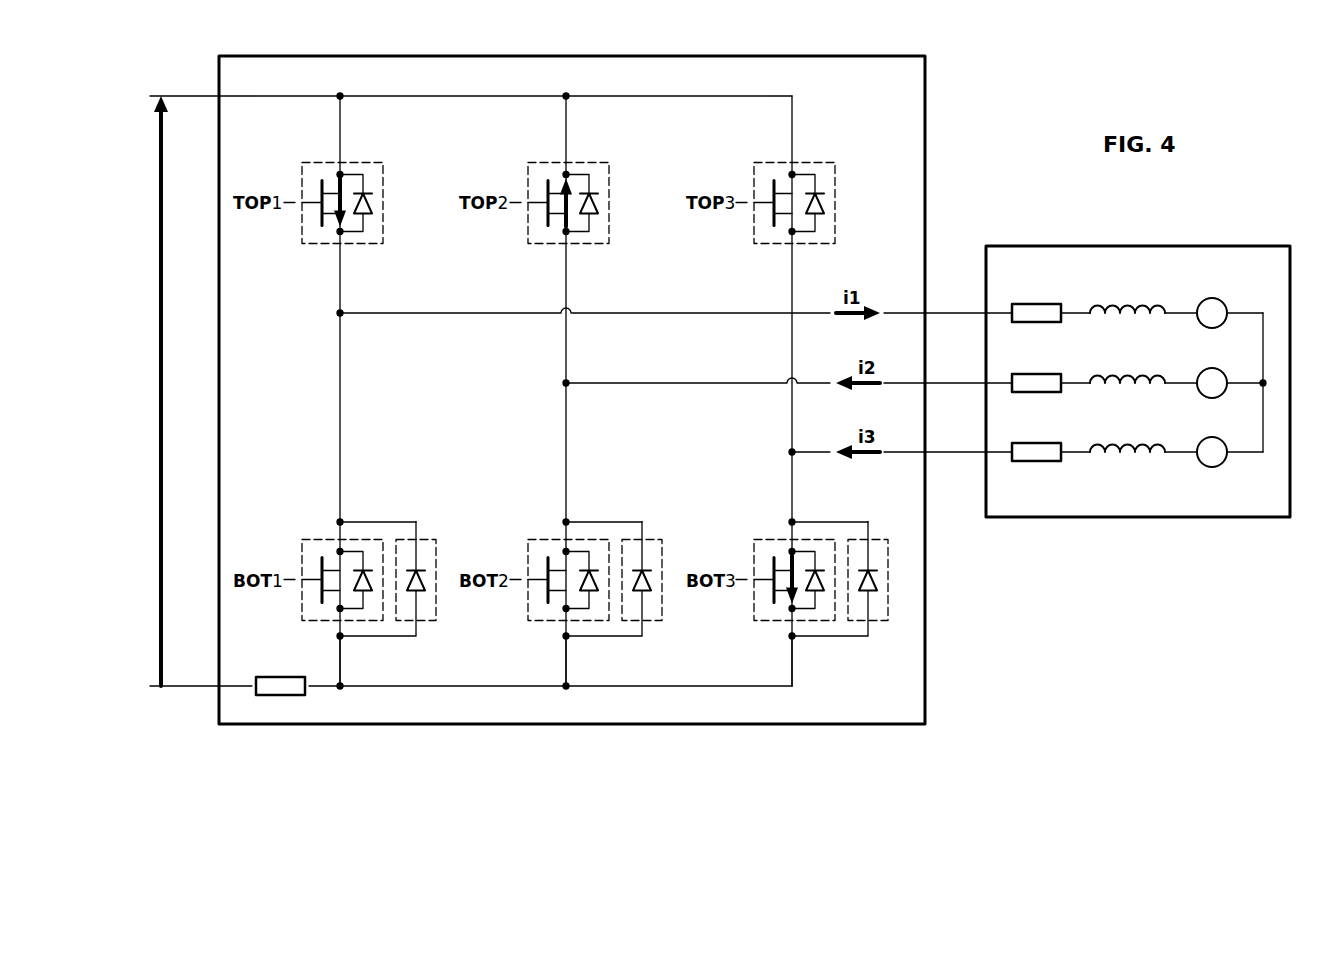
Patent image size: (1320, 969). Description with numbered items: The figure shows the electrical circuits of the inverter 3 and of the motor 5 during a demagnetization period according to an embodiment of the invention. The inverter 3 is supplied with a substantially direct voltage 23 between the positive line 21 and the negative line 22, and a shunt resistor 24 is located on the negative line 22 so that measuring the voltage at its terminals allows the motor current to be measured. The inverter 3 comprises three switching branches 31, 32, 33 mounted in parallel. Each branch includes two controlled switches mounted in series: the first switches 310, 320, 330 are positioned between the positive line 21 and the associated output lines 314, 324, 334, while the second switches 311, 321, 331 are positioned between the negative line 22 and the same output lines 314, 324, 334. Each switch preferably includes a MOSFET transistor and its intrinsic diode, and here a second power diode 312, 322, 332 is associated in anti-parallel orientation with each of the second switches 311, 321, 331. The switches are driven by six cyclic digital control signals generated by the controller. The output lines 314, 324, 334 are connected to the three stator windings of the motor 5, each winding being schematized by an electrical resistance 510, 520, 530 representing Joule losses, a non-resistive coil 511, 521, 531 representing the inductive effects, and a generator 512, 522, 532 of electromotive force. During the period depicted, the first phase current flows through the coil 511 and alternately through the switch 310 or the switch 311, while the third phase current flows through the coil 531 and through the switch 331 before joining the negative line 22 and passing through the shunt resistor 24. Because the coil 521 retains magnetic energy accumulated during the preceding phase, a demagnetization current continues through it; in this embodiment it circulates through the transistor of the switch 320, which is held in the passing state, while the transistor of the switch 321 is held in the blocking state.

The inverter 3 is at (570, 56).
The motor 5 is at (1137, 246).
The positive line 21 is at (188, 95).
The negative line 22 is at (186, 688).
The direct voltage 23 is at (161, 313).
The shunt resistor 24 is at (281, 677).
The first switching branch 31 is at (340, 668).
The second switching branch 32 is at (566, 668).
The third switching branch 33 is at (792, 668).
The first switch of first branch 310 is at (360, 162).
The first switch of second branch 320 is at (586, 162).
The first switch of third branch 330 is at (812, 162).
The second switch of first branch 311 is at (322, 539).
The second power diode 312 is at (428, 539).
The second switch of second branch 321 is at (548, 539).
The second power diode 322 is at (654, 539).
The second switch of third branch 331 is at (774, 539).
The second power diode 332 is at (880, 539).
The first output line 314 is at (962, 312).
The second output line 324 is at (962, 382).
The third output line 334 is at (962, 451).
The electrical resistance 510 is at (1036, 304).
The non-resistive coil 511 is at (1128, 322).
The generator of electromotive force 512 is at (1210, 328).
The electrical resistance 520 is at (1036, 374).
The non-resistive coil 521 is at (1128, 392).
The generator of electromotive force 522 is at (1210, 398).
The electrical resistance 530 is at (1036, 443).
The non-resistive coil 531 is at (1128, 461).
The generator of electromotive force 532 is at (1210, 467).